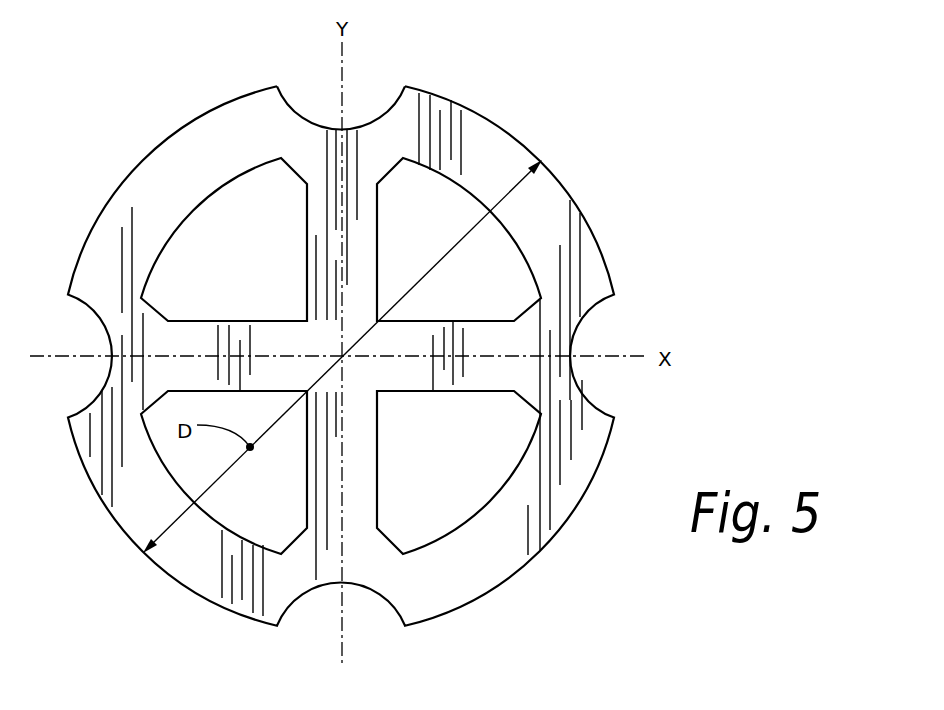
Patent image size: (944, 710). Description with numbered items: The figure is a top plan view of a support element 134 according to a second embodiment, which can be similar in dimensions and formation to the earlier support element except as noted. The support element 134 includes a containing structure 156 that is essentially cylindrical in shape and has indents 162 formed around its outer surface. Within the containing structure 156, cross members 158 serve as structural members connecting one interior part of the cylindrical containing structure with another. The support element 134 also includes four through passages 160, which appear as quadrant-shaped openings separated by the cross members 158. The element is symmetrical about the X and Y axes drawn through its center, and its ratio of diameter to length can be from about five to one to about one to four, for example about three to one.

The support element 134 is at (618, 197).
The containing structure 156 is at (205, 142).
The cross members 158 is at (365, 448).
The through passages 160 is at (223, 250).
The indents 162 is at (383, 110).